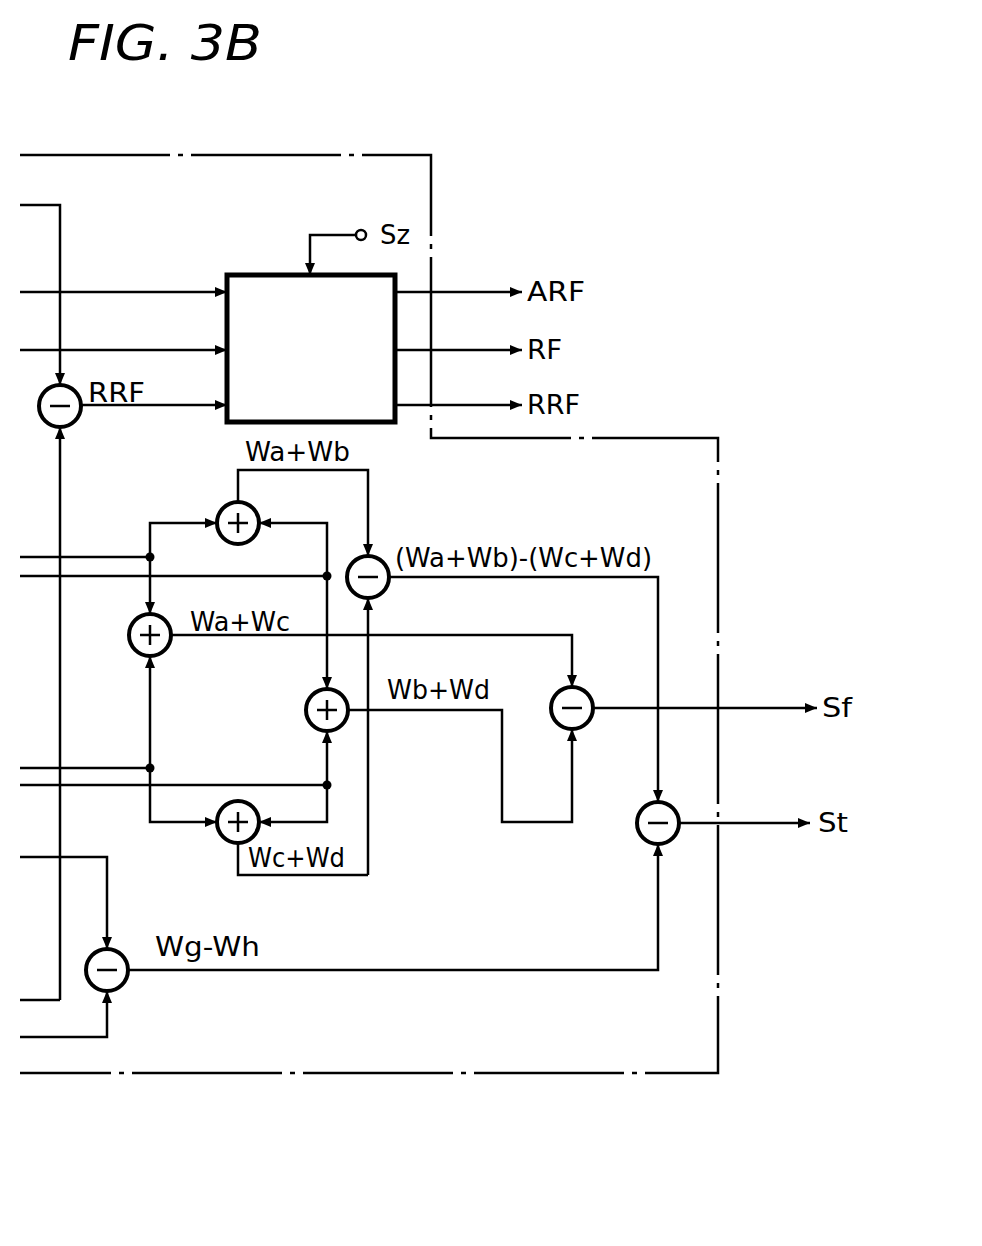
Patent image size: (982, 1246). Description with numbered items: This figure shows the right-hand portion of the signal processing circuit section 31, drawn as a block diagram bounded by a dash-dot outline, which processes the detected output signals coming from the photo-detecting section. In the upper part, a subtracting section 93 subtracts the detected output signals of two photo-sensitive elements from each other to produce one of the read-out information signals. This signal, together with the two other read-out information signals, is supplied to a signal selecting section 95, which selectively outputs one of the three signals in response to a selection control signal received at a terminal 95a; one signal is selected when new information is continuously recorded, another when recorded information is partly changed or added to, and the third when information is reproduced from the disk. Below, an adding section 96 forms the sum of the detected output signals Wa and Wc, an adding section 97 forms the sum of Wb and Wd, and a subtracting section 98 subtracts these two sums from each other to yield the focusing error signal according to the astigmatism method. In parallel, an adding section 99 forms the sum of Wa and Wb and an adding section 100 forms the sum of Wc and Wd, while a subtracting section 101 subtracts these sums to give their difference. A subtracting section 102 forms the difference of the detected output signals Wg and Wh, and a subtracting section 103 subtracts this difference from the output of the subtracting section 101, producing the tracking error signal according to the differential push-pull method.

The signal processing circuit section 31 is at (718, 1040).
The subtracting section 93 is at (77, 423).
The signal selecting section 95 is at (258, 274).
The terminal 95a is at (356, 230).
The adding section 96 is at (164, 652).
The adding section 97 is at (306, 698).
The subtracting section 98 is at (589, 724).
The adding section 99 is at (225, 504).
The adding section 100 is at (220, 840).
The subtracting section 101 is at (378, 557).
The subtracting section 102 is at (125, 988).
The subtracting section 103 is at (647, 843).